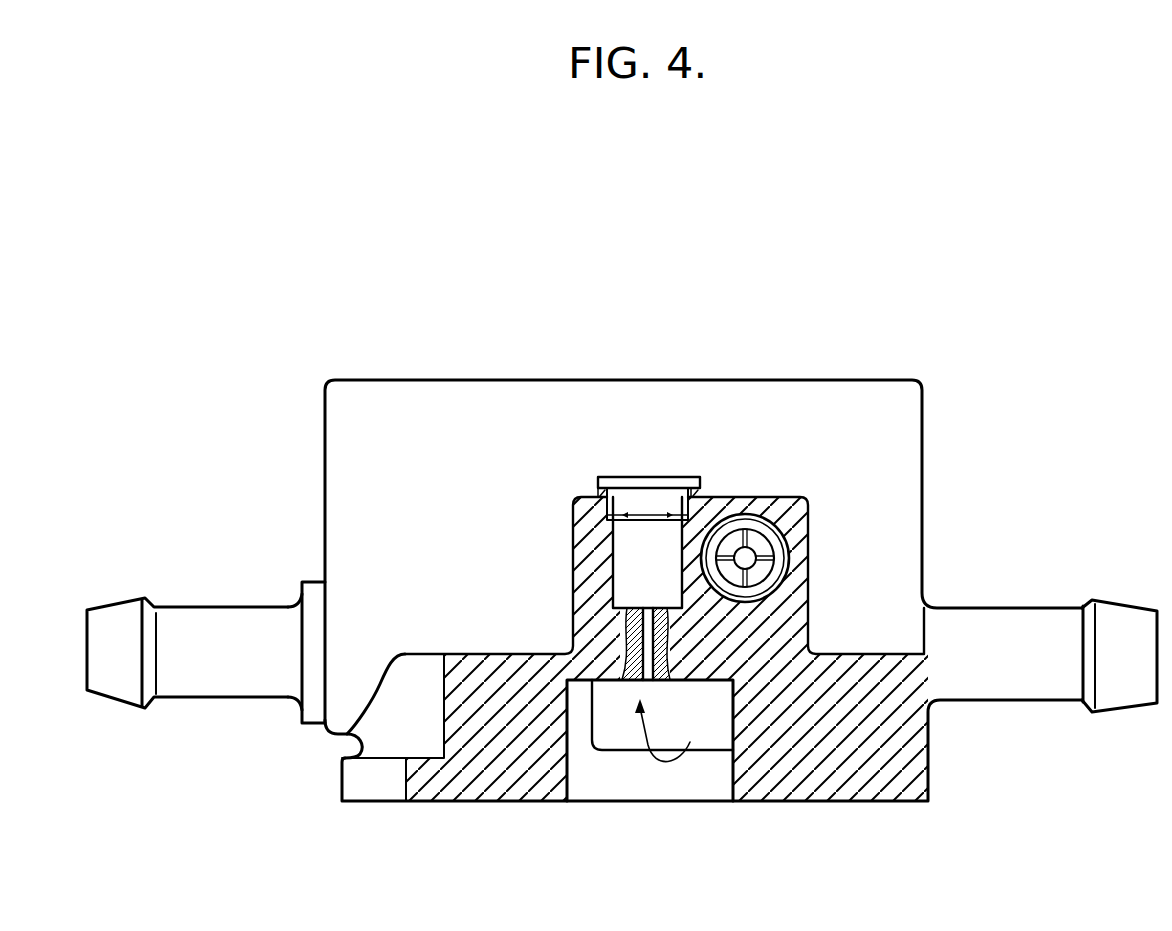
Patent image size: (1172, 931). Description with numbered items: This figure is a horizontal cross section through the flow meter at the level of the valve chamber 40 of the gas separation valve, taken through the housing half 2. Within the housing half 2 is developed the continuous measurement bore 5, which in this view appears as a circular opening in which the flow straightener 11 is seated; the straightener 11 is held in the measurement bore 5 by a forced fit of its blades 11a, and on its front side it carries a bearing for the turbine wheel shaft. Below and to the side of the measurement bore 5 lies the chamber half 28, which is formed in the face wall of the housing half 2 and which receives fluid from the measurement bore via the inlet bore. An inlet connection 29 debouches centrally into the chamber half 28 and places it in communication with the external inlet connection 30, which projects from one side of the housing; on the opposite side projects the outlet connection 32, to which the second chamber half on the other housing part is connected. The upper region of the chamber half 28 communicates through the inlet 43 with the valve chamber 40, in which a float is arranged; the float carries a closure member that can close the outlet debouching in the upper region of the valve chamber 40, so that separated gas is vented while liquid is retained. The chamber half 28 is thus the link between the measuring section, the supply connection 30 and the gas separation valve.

The housing half 2 is at (345, 542).
The measurement bore 5 is at (782, 534).
The flow straightener 11 is at (762, 542).
The blades 11a is at (766, 568).
The chamber half 28 is at (637, 784).
The inlet connection 29 is at (607, 738).
The inlet connection 30 is at (232, 624).
The outlet connection 32 is at (1017, 629).
The valve chamber 40 is at (620, 598).
The inlet 43 is at (650, 634).